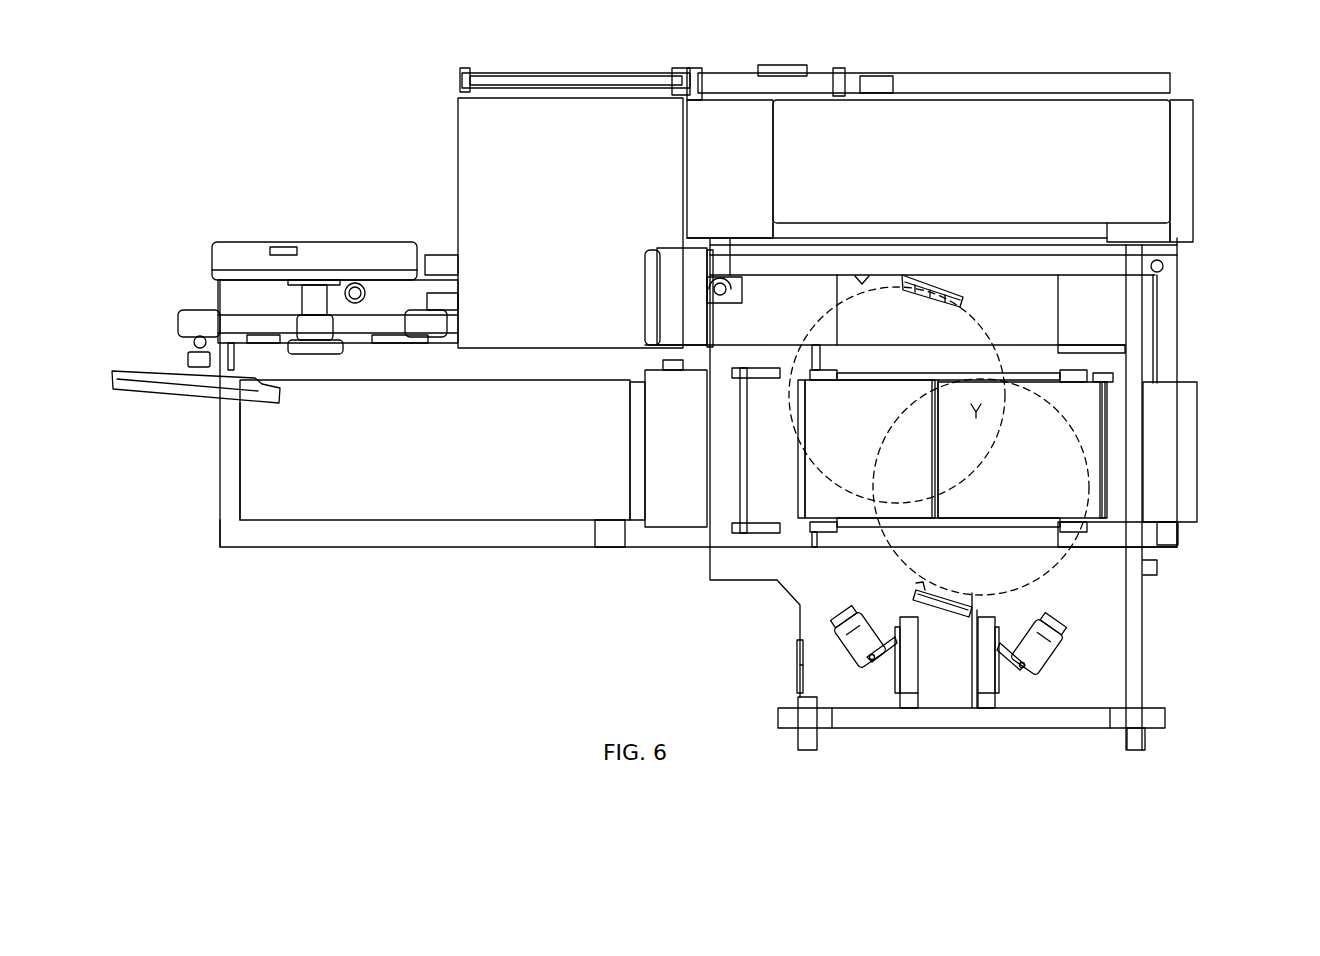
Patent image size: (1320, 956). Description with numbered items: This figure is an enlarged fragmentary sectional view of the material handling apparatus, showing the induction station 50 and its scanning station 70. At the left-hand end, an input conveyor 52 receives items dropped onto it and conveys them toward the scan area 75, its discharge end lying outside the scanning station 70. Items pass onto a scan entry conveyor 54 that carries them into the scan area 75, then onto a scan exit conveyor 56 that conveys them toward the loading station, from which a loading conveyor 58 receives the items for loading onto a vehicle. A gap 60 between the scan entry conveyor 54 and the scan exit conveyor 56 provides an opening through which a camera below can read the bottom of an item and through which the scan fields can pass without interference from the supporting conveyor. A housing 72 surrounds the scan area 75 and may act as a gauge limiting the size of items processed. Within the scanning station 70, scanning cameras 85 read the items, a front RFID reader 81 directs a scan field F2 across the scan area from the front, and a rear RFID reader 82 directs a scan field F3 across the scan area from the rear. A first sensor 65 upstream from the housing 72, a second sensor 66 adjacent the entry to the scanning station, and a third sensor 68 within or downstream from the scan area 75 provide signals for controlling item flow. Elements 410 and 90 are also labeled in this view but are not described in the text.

The induction station 50 is at (205, 467).
The housing 410 is at (589, 205).
The input conveyor 52 is at (443, 459).
The scan entry conveyor 54 is at (833, 424).
The scan exit conveyor 56 is at (1032, 482).
The loading conveyor 58 is at (1117, 465).
The gap 60 is at (971, 410).
The first sensor 65 is at (663, 363).
The second sensor 66 is at (805, 347).
The third sensor 68 is at (1107, 372).
The scanning station 70 is at (882, 730).
The housing 72 is at (800, 625).
The scanning area 75 is at (945, 410).
The front RFID reader 81 is at (960, 603).
The rear RFID reader 82 is at (962, 300).
The scanning cameras 85 is at (848, 635).
The T bracket 90 is at (737, 493).
The scan field F2 is at (1057, 570).
The scan field F3 is at (817, 332).